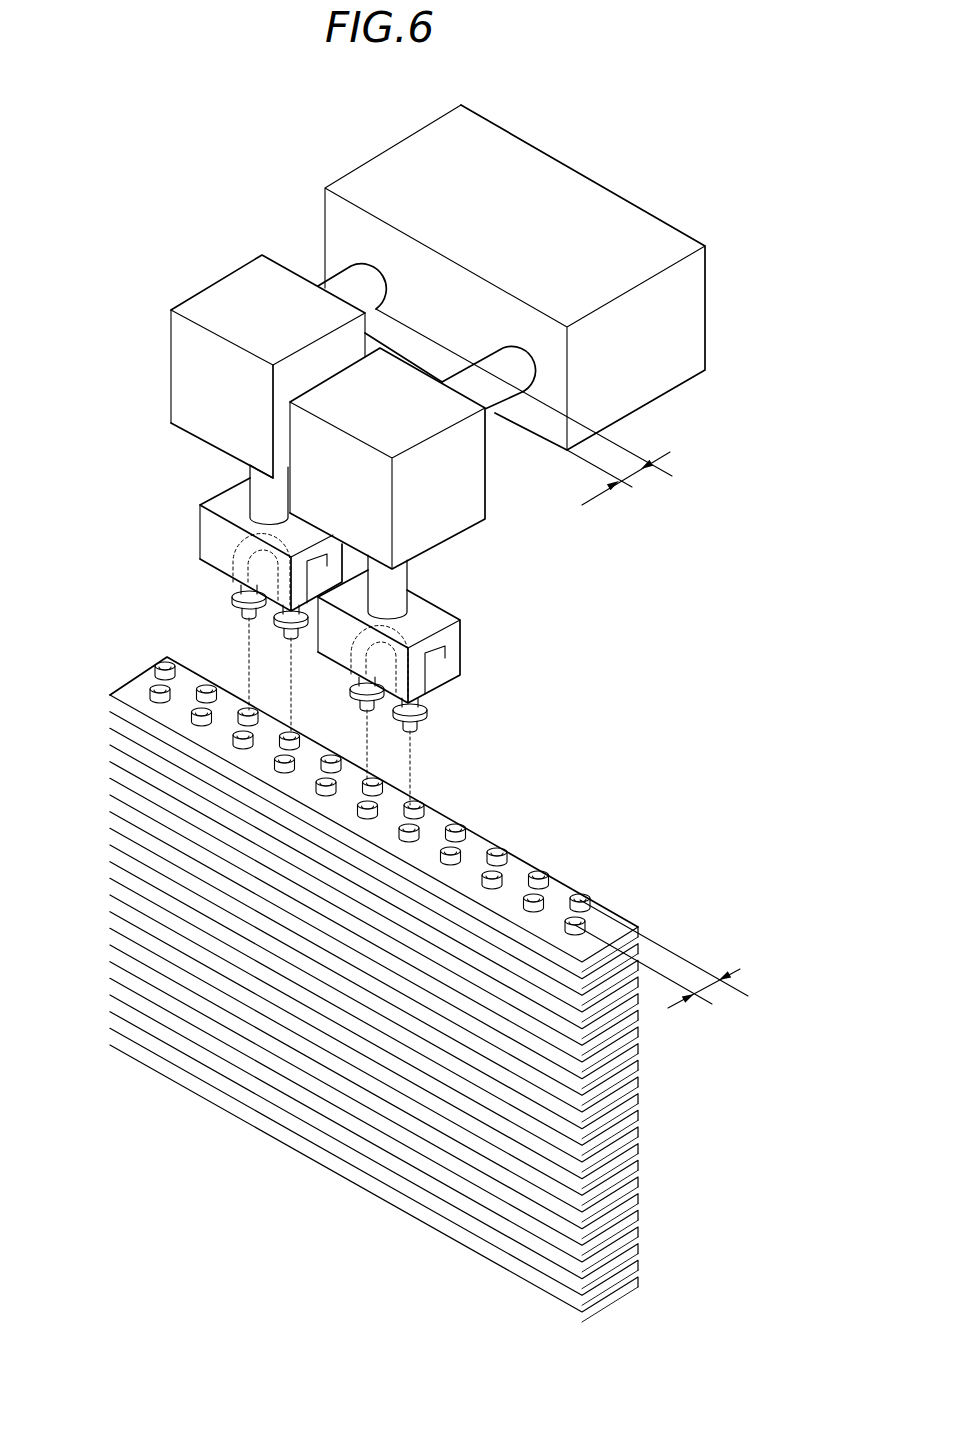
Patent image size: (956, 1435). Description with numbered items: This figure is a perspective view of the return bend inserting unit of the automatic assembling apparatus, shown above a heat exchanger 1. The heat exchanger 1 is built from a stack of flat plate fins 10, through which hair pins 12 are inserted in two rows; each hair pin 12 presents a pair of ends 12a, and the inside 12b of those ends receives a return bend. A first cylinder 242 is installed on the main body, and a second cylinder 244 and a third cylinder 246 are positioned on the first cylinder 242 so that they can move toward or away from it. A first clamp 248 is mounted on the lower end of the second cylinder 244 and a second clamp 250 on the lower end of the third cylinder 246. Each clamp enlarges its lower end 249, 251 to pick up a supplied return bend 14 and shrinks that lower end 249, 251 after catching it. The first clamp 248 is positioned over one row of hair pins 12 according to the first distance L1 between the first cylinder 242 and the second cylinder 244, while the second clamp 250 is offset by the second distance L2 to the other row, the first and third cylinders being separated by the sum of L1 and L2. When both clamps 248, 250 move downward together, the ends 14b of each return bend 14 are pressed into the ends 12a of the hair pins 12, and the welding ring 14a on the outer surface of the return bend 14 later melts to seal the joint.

The heat exchanger 1 is at (429, 991).
The flat plate fins 10 is at (415, 1207).
The hair pins 12 is at (375, 798).
The ends of hair pins 12a is at (295, 738).
The inside of hair pin 12b is at (460, 835).
The return bends 14 is at (312, 695).
The welding ring 14a is at (418, 727).
The ends of return bend 14b is at (415, 731).
The first cylinder 242 is at (627, 223).
The second cylinder 244 is at (238, 288).
The third cylinder 246 is at (455, 497).
The first clamp 248 is at (191, 544).
The lower end of first clamp 249 is at (212, 560).
The second clamp 250 is at (468, 649).
The lower end of second clamp 251 is at (448, 681).
The first distance L1 is at (524, 408).
The second distance L2 is at (661, 959).